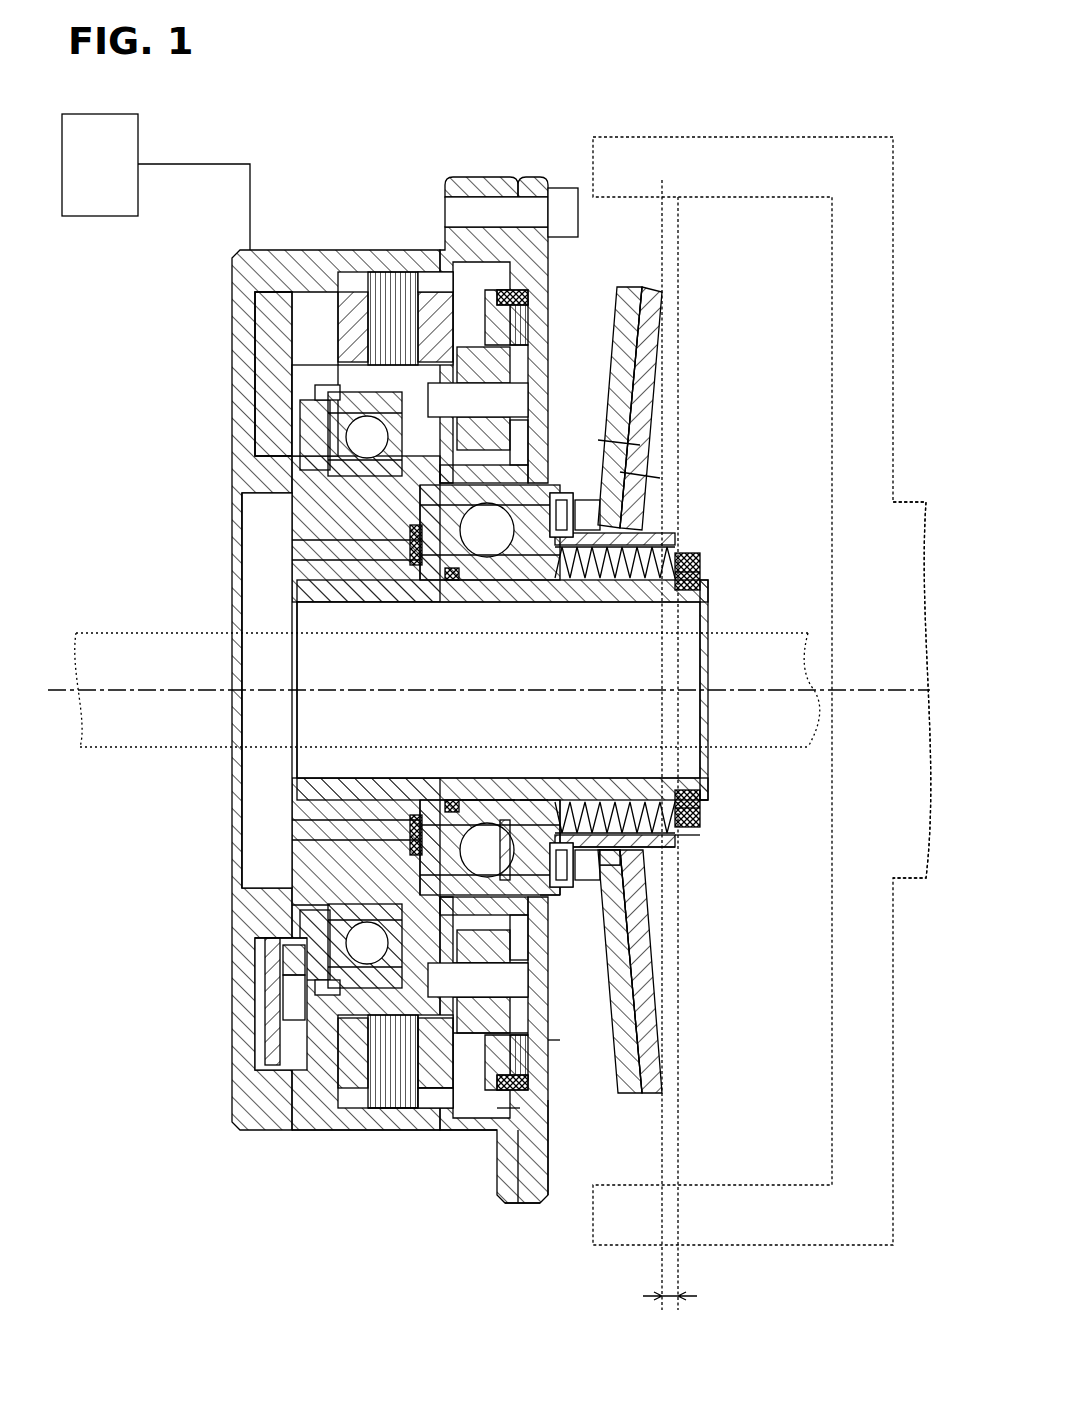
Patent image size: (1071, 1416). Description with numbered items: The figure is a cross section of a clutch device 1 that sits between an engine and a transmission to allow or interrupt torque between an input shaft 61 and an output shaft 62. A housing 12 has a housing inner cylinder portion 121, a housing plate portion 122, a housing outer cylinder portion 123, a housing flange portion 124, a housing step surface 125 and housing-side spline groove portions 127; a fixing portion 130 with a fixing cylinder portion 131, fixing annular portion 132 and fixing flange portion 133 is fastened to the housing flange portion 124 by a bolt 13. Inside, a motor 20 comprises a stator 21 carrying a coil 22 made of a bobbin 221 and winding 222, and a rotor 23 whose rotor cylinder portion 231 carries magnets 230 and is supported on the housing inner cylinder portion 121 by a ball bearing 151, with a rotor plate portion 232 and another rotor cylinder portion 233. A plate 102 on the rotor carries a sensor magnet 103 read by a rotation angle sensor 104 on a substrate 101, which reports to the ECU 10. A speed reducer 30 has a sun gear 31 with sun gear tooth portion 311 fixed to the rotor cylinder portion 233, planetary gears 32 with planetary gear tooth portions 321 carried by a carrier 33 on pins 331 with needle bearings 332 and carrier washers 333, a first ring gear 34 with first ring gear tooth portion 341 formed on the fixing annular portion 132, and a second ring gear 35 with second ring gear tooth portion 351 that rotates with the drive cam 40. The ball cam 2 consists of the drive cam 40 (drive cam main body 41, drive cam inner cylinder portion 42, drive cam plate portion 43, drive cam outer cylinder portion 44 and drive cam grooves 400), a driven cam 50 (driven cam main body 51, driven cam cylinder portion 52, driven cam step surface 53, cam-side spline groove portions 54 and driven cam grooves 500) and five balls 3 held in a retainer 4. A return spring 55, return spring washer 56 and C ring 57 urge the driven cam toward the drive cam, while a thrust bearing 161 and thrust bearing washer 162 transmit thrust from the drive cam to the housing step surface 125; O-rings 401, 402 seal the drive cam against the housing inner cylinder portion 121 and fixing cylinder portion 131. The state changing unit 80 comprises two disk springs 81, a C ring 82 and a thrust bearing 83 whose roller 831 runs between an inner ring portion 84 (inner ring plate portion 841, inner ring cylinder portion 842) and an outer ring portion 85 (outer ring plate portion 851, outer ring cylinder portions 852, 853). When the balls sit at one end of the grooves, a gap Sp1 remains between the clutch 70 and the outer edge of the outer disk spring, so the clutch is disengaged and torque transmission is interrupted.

The clutch device 1 is at (568, 56).
The ball cam 2 is at (355, 590).
The ball 3 is at (355, 525).
The retainer 4 is at (345, 900).
The electronic control unit 10 is at (110, 114).
The housing 12 is at (272, 250).
The bolt 13 is at (566, 192).
The motor 20 is at (340, 375).
The stator 21 is at (350, 340).
The coil 22 is at (355, 330).
The rotor 23 is at (310, 405).
The speed reducer 30 is at (456, 295).
The sun gear 31 is at (330, 462).
The planetary gear 32 is at (330, 440).
The carrier 33 is at (330, 420).
The first ring gear 34 is at (470, 350).
The second ring gear 35 is at (505, 290).
The drive cam 40 is at (350, 483).
The drive cam main body 41 is at (472, 822).
The drive cam inner cylinder portion 42 is at (487, 800).
The drive cam plate portion 43 is at (570, 917).
The drive cam outer cylinder portion 44 is at (560, 1055).
The driven cam 50 is at (360, 565).
The driven cam main body 51 is at (512, 820).
The driven cam cylinder portion 52 is at (640, 842).
The driven cam step surface 53 is at (650, 856).
The cam-side spline groove portion 54 is at (528, 830).
The return spring 55 is at (690, 832).
The return spring washer 56 is at (700, 816).
The C ring 57 is at (700, 800).
The input shaft 61 is at (78, 643).
The output shaft 62 is at (896, 433).
The clutch 70 is at (757, 210).
The state changing unit 80 is at (640, 288).
The disk spring 81 is at (627, 288).
The C ring 82 is at (652, 528).
The thrust bearing 83 is at (600, 873).
The inner ring portion 84 is at (596, 830).
The outer ring portion 85 is at (655, 522).
The substrate 101 is at (272, 1018).
The plate 102 is at (285, 985).
The sensor magnet 103 is at (285, 957).
The rotation angle sensor 104 is at (275, 965).
The housing inner cylinder portion 121 is at (712, 790).
The housing plate portion 122 is at (262, 1050).
The housing outer cylinder portion 123 is at (330, 1130).
The housing flange portion 124 is at (542, 1192).
The housing step surface 125 is at (418, 822).
The housing-side spline groove portion 127 is at (560, 820).
The fixing portion 130 is at (550, 1132).
The fixing cylinder portion 131 is at (492, 1110).
The fixing annular portion 132 is at (470, 1130).
The fixing flange portion 133 is at (550, 1160).
The ball bearing 151 is at (300, 935).
The thrust bearing 161 is at (365, 838).
The thrust bearing washer 162 is at (365, 855).
The bobbin 221 is at (338, 300).
The winding 222 is at (418, 312).
The magnet 230 is at (325, 392).
The rotor cylinder portion 231 is at (392, 1108).
The rotor plate portion 232 is at (415, 1108).
The rotor cylinder portion 233 is at (437, 1098).
The sun gear tooth portion 311 is at (560, 445).
The planetary gear tooth portion 321 is at (560, 475).
The pin 331 is at (560, 985).
The needle bearing 332 is at (560, 1005).
The carrier washer 333 is at (560, 960).
The first ring gear tooth portion 341 is at (420, 272).
The second ring gear tooth portion 351 is at (392, 280).
The drive cam groove 400 is at (350, 505).
The O-ring 401 is at (452, 800).
The O-ring 402 is at (560, 1085).
The driven cam groove 500 is at (360, 545).
The roller 831 is at (590, 893).
The inner ring plate portion 841 is at (582, 800).
The inner ring cylinder portion 842 is at (612, 833).
The outer ring plate portion 851 is at (655, 508).
The outer ring cylinder portion 852 is at (630, 582).
The outer ring cylinder portion 853 is at (590, 582).
The gap Sp1 is at (671, 1300).